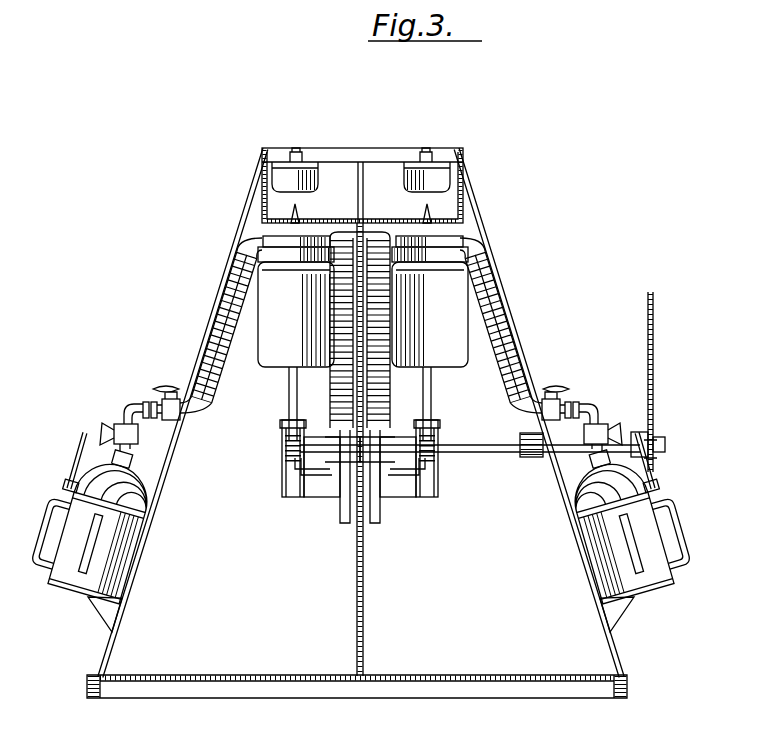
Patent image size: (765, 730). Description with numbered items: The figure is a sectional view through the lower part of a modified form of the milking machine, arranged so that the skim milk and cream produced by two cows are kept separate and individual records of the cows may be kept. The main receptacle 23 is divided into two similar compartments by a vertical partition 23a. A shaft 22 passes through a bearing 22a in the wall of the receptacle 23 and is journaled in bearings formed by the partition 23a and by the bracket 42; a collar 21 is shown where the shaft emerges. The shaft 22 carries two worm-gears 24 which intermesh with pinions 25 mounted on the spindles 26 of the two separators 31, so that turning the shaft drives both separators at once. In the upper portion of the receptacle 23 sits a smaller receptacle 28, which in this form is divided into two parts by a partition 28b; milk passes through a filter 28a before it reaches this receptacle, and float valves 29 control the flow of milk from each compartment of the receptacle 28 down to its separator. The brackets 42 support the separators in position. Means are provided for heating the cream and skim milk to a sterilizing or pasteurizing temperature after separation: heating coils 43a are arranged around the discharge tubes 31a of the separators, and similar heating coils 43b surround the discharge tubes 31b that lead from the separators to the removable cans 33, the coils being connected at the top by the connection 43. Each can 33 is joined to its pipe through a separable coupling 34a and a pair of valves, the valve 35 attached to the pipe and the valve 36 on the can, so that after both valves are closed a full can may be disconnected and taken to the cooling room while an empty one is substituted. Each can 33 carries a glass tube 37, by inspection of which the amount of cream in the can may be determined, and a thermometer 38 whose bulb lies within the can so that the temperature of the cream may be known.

The bearing collar 21 is at (660, 449).
The shaft 22 is at (470, 446).
The bearing 22a is at (528, 458).
The receptacle 23 is at (110, 650).
The vertical partition 23a is at (363, 612).
The worm-gear 24 is at (282, 428).
The pinion 25 is at (286, 450).
The spindle 26 is at (290, 402).
The smaller receptacle 28 is at (275, 198).
The filter 28a is at (298, 150).
The partition 28b is at (360, 166).
The float valve 29 is at (298, 217).
The separator 31 is at (265, 350).
The discharge tube 31a is at (346, 512).
The discharge tube 31b is at (213, 360).
The removable can 33 is at (68, 532).
The separable coupling 34a is at (146, 406).
The valve 35 is at (174, 422).
The valve 36 is at (108, 426).
The glass tube 37 is at (80, 548).
The thermometer 38 is at (78, 465).
The bracket 42 is at (322, 487).
The coil connection 43 is at (383, 232).
The heating coil 43a is at (353, 423).
The heating coil 43b is at (214, 317).